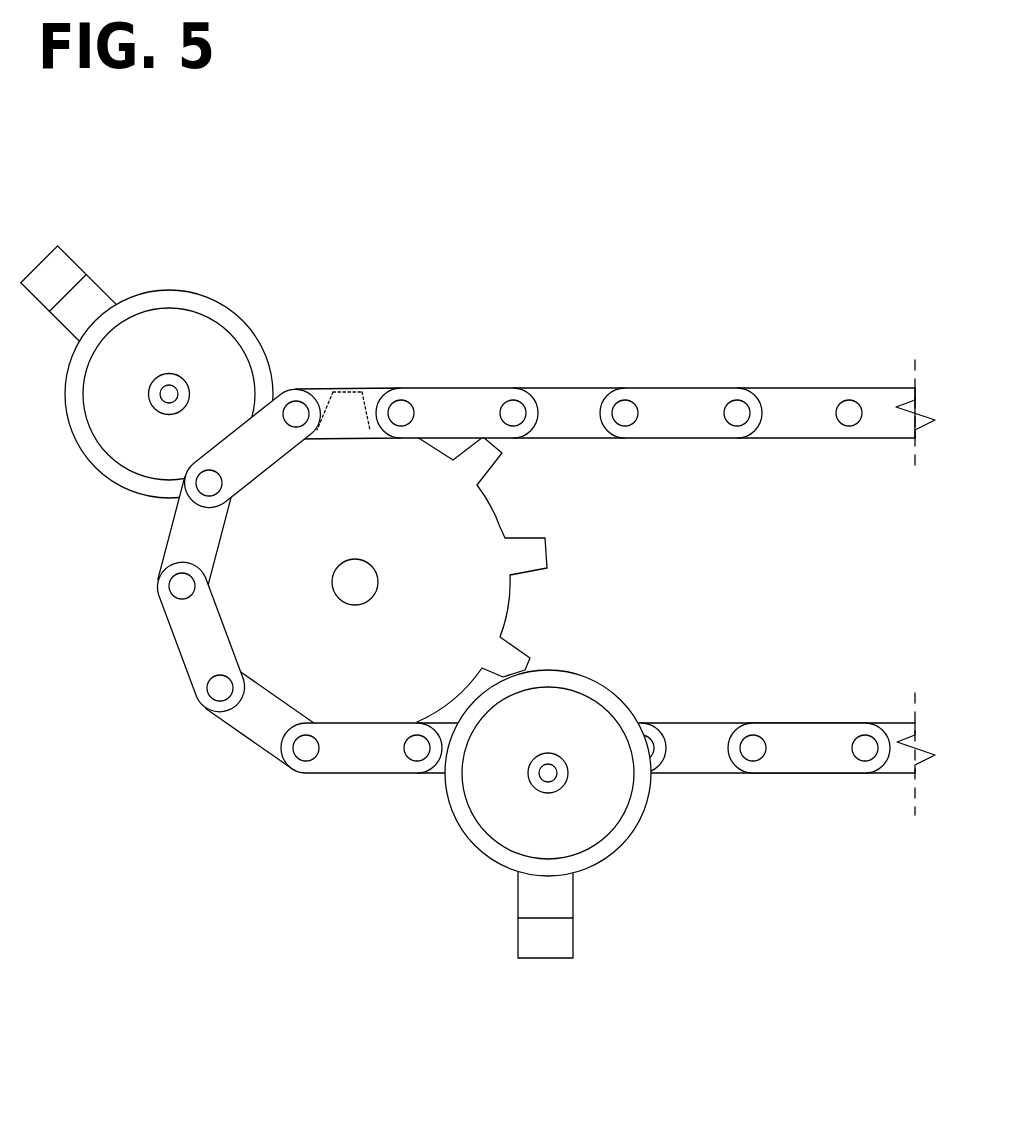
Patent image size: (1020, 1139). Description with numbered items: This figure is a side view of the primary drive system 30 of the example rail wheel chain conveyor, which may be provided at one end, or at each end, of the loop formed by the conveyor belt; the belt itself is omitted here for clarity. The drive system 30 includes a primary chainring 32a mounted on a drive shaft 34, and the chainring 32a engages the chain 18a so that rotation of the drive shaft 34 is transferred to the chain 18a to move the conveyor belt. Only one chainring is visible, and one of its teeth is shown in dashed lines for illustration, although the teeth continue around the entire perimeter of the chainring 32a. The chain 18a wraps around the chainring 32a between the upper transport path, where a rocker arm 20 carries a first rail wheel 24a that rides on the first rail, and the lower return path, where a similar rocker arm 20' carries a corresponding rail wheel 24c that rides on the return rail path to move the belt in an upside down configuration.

The rocker arm 20 is at (83, 282).
The rocker arm 20' is at (583, 915).
The first rail wheel 24a is at (233, 312).
The rail wheel 24c is at (501, 861).
The chain 18a is at (757, 388).
The primary drive system 30 is at (817, 270).
The primary chainring 32a is at (502, 523).
The drive shaft 34 is at (357, 559).